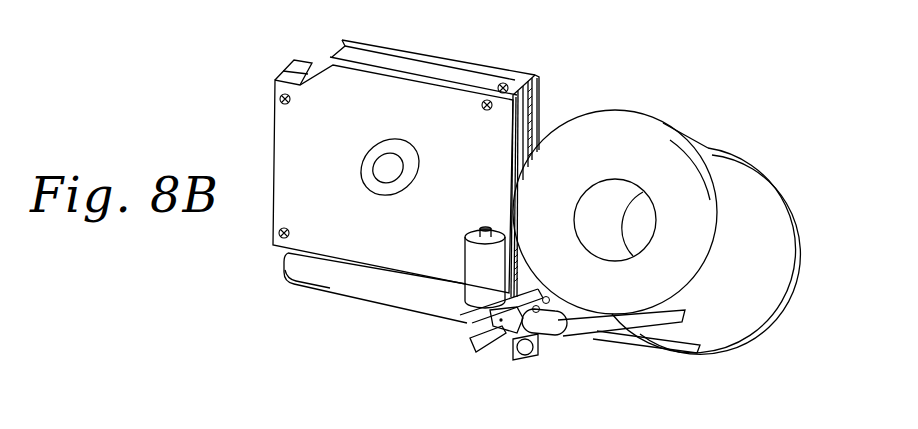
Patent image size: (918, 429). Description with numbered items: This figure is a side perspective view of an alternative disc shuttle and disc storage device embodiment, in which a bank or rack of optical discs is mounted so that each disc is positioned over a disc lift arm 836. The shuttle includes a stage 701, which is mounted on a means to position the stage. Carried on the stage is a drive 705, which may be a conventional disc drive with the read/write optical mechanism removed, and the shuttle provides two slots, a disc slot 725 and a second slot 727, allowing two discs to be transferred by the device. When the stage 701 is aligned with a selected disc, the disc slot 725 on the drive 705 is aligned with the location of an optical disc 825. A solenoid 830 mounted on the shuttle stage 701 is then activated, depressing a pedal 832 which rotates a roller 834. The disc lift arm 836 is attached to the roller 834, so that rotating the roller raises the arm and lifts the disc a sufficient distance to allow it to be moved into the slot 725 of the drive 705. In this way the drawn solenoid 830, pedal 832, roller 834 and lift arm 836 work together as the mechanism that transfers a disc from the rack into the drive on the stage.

The drive 705 is at (337, 80).
The slot 727 is at (538, 92).
The disc slot 725 is at (520, 133).
The optical disc 825 is at (652, 128).
The stage 701 is at (375, 285).
The solenoid 830 is at (481, 306).
The pedal 832 is at (484, 353).
The roller 834 is at (557, 340).
The disc lift arm 836 is at (656, 322).